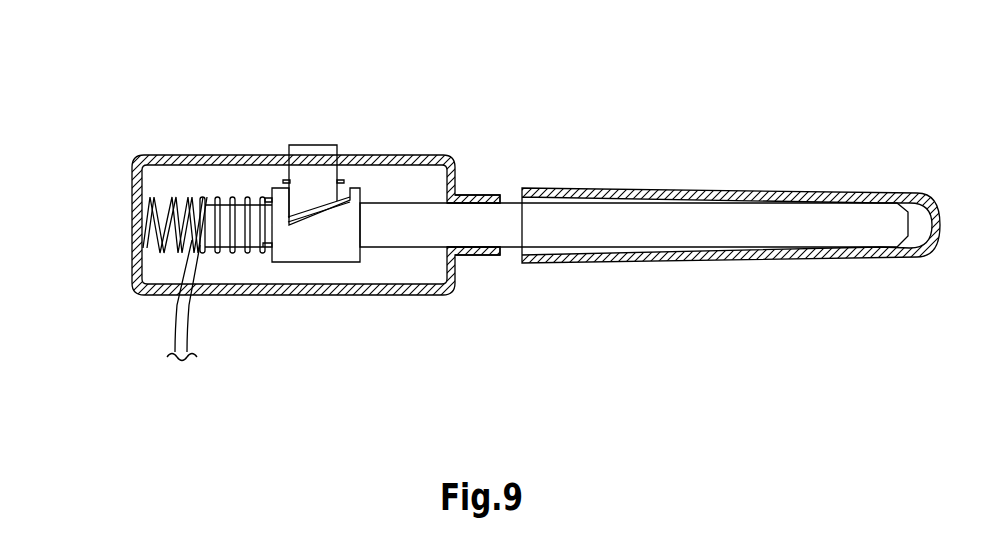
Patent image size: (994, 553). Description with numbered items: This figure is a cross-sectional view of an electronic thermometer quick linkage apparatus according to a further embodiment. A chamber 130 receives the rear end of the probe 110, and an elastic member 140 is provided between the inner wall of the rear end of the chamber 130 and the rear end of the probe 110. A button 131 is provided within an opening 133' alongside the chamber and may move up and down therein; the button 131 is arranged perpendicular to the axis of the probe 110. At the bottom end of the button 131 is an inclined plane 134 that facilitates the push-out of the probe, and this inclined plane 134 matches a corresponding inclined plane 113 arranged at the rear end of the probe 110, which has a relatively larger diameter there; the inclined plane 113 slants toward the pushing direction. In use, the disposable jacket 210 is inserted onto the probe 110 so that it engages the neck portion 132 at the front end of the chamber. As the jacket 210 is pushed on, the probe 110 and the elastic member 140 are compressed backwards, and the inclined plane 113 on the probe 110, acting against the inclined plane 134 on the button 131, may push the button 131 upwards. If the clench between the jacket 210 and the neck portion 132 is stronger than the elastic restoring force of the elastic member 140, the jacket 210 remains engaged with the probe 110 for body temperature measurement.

The probe 110 is at (604, 223).
The inclined plane 113 is at (348, 200).
The chamber 130 is at (167, 157).
The button 131 is at (317, 155).
The neck portion 132 is at (493, 257).
The opening 133' is at (381, 148).
The inclined plane 134 is at (312, 212).
The elastic member 140 is at (157, 247).
The disposable jacket 210 is at (787, 197).